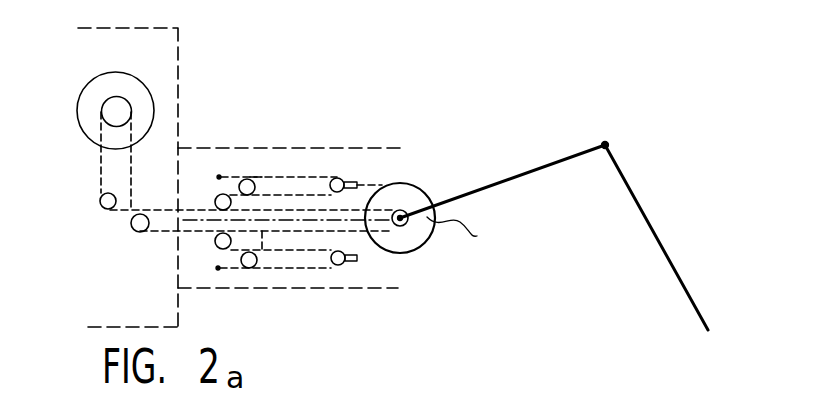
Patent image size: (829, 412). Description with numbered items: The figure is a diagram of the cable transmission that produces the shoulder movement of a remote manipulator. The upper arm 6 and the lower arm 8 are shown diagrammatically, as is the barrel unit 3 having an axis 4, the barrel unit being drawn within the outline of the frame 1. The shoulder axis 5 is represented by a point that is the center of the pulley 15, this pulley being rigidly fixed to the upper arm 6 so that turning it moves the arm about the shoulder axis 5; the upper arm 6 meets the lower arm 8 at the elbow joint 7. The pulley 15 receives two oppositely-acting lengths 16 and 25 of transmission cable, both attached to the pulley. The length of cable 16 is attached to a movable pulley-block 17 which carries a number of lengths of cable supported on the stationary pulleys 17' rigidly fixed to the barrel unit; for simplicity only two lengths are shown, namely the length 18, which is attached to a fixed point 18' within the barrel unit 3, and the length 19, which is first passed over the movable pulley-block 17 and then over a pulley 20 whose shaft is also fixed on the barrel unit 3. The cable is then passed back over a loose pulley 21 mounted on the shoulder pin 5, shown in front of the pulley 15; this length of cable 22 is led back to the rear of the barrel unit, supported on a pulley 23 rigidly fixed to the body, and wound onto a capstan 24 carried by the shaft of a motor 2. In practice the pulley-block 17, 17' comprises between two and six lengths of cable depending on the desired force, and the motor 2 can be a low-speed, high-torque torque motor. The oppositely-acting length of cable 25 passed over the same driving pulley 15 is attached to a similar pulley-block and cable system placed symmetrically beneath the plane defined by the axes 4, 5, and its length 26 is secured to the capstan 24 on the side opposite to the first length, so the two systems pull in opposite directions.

The frame 1 is at (178, 38).
The motor 2 is at (108, 82).
The barrel unit 3 is at (288, 289).
The axis 4 is at (214, 226).
The shoulder axis 5 is at (425, 245).
The upper arm 6 is at (530, 172).
The pivot joint 7 is at (609, 143).
The lower arm 8 is at (667, 253).
The pulley 15 is at (466, 236).
The length of transmission cable 16 is at (382, 184).
The movable pulley-block 17 is at (329, 155).
The stationary pulleys 17' is at (277, 135).
The length of cable 18 is at (332, 142).
The fixed point 18' is at (234, 174).
The length of cable 19 is at (339, 181).
The pulley 20 is at (216, 204).
The loose pulley 21 is at (400, 218).
The length of cable 22 is at (258, 252).
The pulley 23 is at (133, 229).
The capstan 24 is at (120, 112).
The oppositely-acting length of cable 25 is at (358, 258).
The length of cable 26 is at (98, 182).